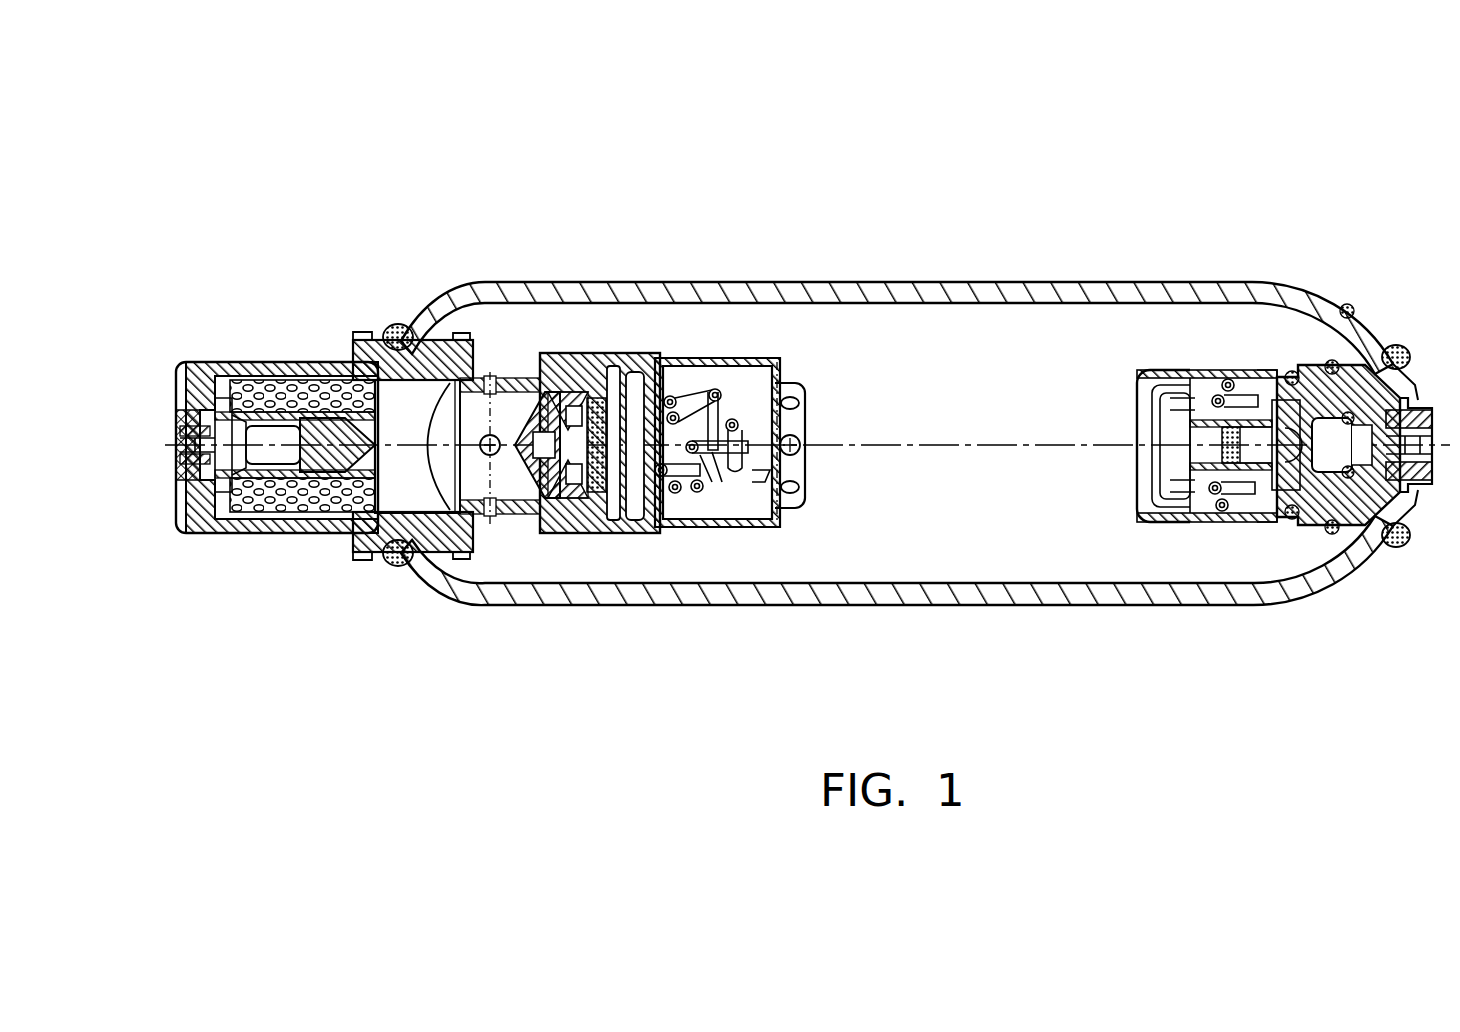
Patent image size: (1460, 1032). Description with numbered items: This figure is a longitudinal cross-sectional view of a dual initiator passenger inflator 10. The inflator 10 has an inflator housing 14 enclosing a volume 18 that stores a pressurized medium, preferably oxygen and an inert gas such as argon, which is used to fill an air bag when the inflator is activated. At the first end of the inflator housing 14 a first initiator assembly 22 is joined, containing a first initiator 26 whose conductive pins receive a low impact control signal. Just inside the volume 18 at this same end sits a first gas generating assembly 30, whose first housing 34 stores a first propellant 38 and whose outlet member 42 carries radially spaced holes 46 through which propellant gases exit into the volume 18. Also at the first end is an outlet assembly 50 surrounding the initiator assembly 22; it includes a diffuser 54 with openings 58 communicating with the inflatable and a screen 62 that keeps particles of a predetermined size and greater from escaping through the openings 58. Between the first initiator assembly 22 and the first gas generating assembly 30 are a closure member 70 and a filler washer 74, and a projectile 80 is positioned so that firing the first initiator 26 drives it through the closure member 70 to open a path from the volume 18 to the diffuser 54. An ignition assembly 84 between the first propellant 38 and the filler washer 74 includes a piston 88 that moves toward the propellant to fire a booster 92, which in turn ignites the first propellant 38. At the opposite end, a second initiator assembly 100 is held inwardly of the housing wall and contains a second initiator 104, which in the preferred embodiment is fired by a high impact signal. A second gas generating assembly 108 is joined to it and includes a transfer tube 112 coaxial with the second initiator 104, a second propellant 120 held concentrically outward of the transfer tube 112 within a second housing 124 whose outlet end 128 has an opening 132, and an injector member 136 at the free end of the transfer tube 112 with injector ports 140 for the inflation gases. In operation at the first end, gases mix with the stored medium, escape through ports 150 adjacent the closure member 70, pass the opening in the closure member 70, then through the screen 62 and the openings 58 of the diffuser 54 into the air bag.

The dual initiator passenger inflator 10 is at (990, 255).
The inflator housing 14 is at (1213, 281).
The volume 18 is at (1160, 300).
The first initiator assembly 22 is at (277, 438).
The first initiator 26 is at (276, 430).
The first gas generating assembly 30 is at (670, 353).
The first housing 34 is at (759, 483).
The first propellant 38 is at (702, 492).
The outlet member 42 is at (819, 413).
The radially spaced holes 46 is at (806, 405).
The outlet assembly 50 is at (406, 442).
The diffuser 54 is at (204, 363).
The openings 58 is at (262, 534).
The screen 62 is at (345, 548).
The closure member 70 is at (440, 416).
The filler washer 74 is at (500, 408).
The projectile 80 is at (345, 456).
The ignition assembly 84 is at (574, 484).
The piston 88 is at (520, 412).
The booster 92 is at (587, 520).
The second initiator assembly 100 is at (1397, 545).
The second initiator 104 is at (1332, 522).
The second gas generating assembly 108 is at (1236, 452).
The transfer tube 112 is at (1203, 420).
The second propellant 120 is at (1218, 526).
The second housing 124 is at (1258, 370).
The outlet end 128 is at (1148, 378).
The opening 132 is at (1150, 410).
The injector member 136 is at (1200, 455).
The injector ports 140 is at (1195, 480).
The ports 150 is at (494, 514).